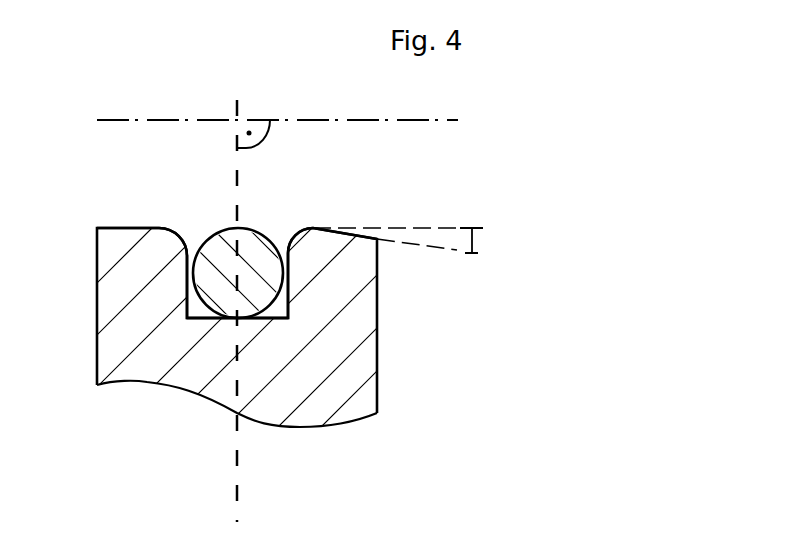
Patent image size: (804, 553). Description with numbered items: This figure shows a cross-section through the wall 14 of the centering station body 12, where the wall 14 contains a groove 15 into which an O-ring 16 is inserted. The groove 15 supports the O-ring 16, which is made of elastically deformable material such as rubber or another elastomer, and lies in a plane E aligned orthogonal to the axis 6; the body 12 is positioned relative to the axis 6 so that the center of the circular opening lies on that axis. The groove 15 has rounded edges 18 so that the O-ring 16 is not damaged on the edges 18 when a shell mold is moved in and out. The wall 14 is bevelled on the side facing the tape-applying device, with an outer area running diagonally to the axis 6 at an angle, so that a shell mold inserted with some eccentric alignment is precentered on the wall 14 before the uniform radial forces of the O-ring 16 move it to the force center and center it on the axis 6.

The axis 6 is at (423, 120).
The body 12 is at (360, 383).
The wall 14 is at (313, 230).
The groove 15 is at (280, 318).
The O-ring 16 is at (268, 265).
The rounded edges 18 is at (298, 232).
The plane E is at (235, 488).